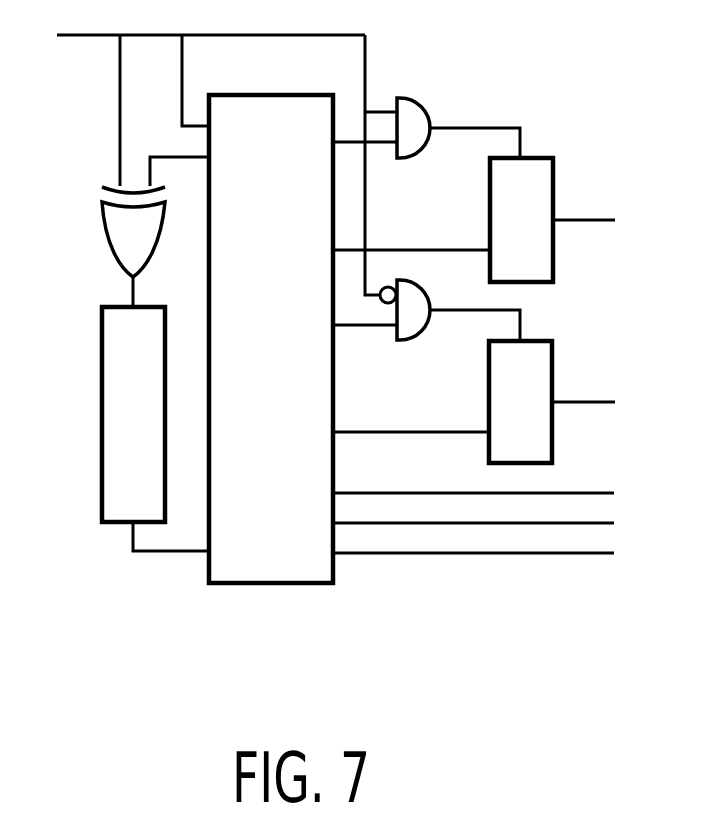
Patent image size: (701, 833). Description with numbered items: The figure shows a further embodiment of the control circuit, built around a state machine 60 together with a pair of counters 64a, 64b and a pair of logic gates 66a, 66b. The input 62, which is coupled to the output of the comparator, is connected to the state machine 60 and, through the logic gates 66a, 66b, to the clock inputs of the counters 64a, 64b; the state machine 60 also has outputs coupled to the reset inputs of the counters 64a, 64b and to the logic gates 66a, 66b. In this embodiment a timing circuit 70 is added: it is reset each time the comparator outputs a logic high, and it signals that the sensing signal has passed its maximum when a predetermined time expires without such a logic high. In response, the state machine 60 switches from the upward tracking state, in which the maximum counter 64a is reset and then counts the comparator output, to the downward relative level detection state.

The state machine 60 is at (290, 583).
The input 62 is at (78, 37).
The maximum counter 64a is at (553, 182).
The counter 64b is at (552, 368).
The logic gate 66a is at (418, 99).
The logic gate 66b is at (407, 341).
The timing circuit 70 is at (100, 376).